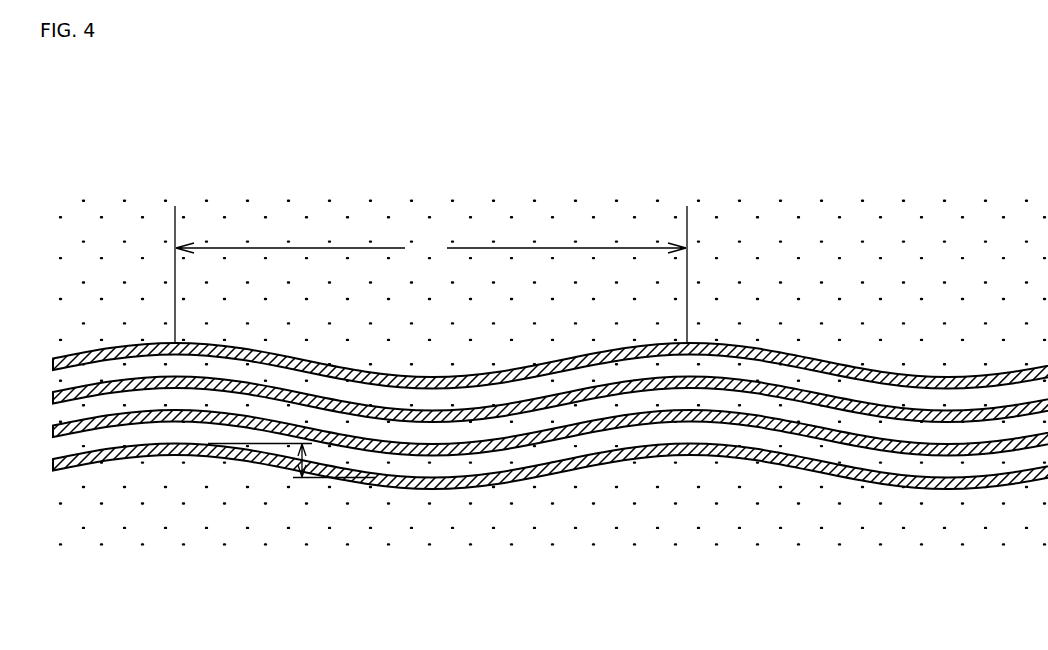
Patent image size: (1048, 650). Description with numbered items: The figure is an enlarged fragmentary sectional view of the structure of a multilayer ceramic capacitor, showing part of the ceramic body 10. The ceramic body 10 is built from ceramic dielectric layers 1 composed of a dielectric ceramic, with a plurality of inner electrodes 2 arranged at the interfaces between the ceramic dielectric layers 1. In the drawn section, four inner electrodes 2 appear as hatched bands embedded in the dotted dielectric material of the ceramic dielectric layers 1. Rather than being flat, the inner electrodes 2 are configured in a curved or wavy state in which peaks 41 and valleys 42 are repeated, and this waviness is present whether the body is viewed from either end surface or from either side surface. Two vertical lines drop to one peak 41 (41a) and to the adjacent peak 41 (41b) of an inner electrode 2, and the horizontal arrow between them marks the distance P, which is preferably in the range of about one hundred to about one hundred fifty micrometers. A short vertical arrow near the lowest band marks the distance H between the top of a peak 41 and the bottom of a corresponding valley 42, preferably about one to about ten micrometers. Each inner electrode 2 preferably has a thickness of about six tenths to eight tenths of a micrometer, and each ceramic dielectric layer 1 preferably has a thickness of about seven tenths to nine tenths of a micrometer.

The ceramic body 10 is at (761, 45).
The peaks 41 is at (178, 441).
The peak 41a is at (175, 343).
The adjacent peak 41b is at (688, 343).
The valleys 42 is at (418, 477).
The ceramic dielectric layers 1 is at (872, 393).
The inner electrodes 2 is at (562, 398).
The distance between adjacent peaks P is at (431, 252).
The distance between peak top and valley bottom H is at (275, 465).